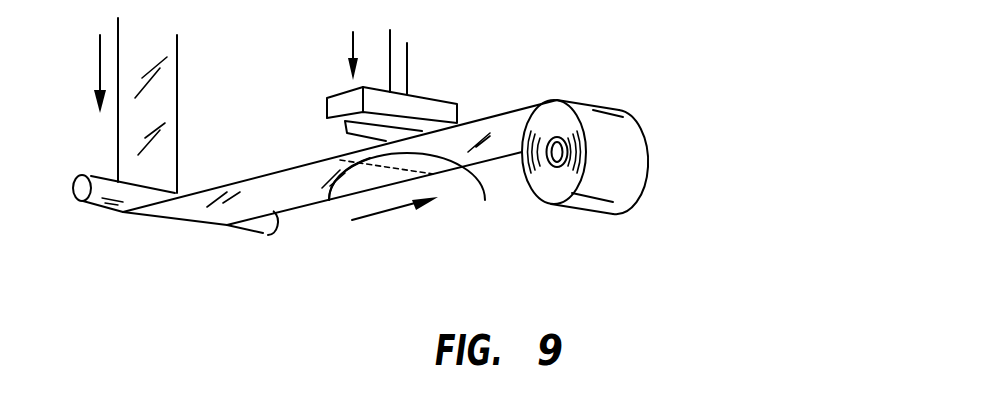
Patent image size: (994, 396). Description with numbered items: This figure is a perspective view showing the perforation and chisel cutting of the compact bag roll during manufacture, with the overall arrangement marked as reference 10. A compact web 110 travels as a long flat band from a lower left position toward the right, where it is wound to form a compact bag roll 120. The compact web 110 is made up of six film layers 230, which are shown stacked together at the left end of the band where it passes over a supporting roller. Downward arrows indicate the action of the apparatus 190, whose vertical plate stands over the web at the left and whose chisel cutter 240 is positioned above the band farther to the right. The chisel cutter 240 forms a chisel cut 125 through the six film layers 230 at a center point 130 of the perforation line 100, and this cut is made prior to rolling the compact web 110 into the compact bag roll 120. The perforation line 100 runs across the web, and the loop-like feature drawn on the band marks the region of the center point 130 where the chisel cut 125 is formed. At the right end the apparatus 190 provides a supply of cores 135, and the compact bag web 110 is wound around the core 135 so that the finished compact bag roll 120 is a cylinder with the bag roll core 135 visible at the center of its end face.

The roll assembly 10 is at (635, 215).
The perforation line 100 is at (437, 175).
The compact web 110 is at (513, 112).
The compact bag roll 120 is at (637, 172).
The chisel cut 125 is at (328, 205).
The center point 130 is at (419, 195).
The bag roll core 135 is at (570, 148).
The apparatus 190 is at (217, 98).
The six film layers 230 is at (242, 203).
The chisel cutter 240 is at (430, 112).